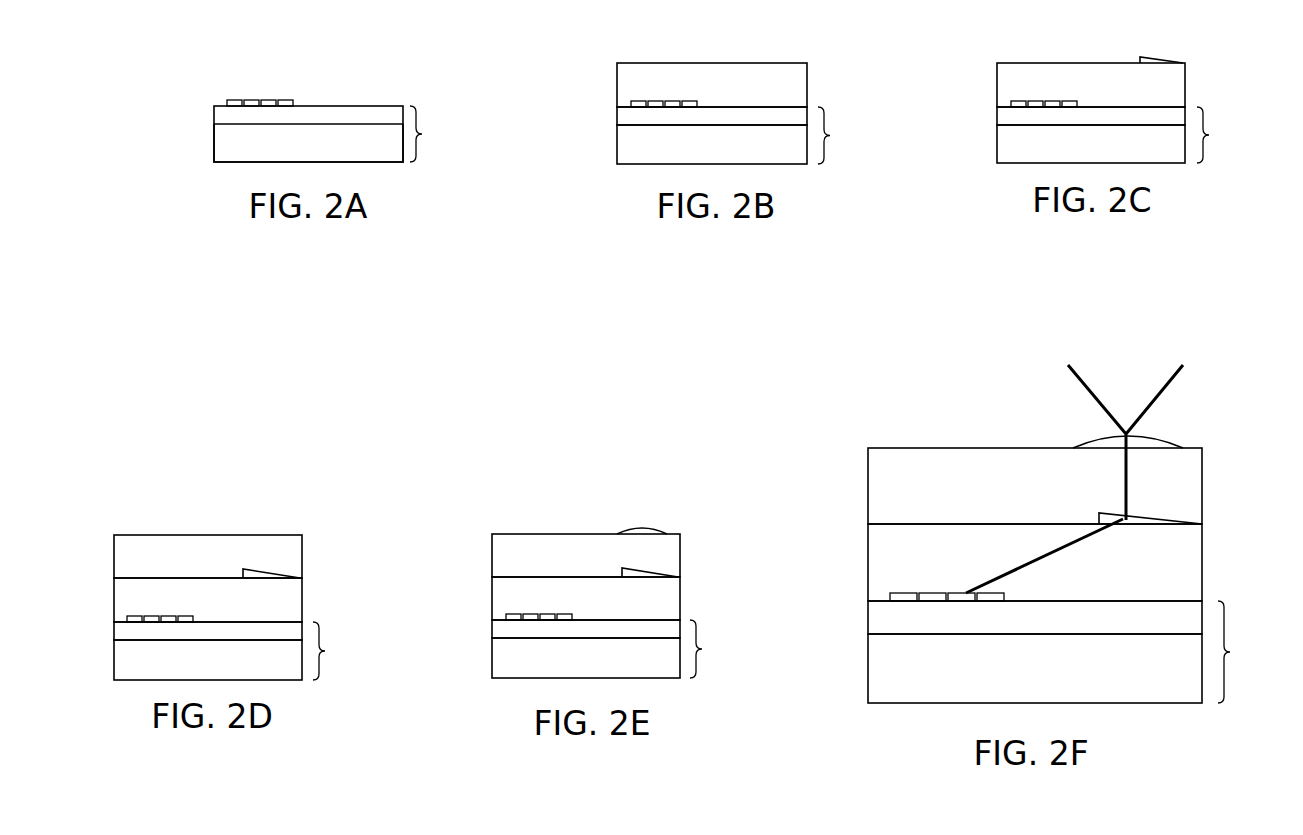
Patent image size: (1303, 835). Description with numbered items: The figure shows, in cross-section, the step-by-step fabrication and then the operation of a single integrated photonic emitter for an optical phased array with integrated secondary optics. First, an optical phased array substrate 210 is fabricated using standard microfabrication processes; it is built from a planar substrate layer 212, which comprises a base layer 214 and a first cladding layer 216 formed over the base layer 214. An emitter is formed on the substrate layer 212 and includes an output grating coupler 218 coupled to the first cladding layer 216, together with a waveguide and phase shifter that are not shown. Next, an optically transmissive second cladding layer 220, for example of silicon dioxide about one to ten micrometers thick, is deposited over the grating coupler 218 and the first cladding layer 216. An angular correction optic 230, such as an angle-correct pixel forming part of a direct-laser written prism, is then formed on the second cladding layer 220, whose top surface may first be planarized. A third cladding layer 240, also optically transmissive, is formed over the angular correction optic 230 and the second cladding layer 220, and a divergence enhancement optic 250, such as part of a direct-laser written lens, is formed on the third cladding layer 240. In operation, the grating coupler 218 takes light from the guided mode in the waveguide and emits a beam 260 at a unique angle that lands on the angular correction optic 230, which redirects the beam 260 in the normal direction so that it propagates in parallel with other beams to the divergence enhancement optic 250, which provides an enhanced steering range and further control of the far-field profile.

In FIG. 2A, the optical phased array substrate 210 is at (371, 84).
In FIG. 2A, the planar substrate layer 212 is at (440, 134).
In FIG. 2B, the planar substrate layer 212 is at (847, 135).
In FIG. 2C, the planar substrate layer 212 is at (1227, 135).
In FIG. 2D, the planar substrate layer 212 is at (344, 651).
In FIG. 2E, the planar substrate layer 212 is at (720, 649).
In FIG. 2F, the planar substrate layer 212 is at (1248, 652).
In FIG. 2A, the base layer 214 is at (218, 145).
In FIG. 2B, the base layer 214 is at (625, 152).
In FIG. 2C, the base layer 214 is at (1003, 152).
In FIG. 2D, the base layer 214 is at (122, 675).
In FIG. 2E, the base layer 214 is at (498, 663).
In FIG. 2F, the base layer 214 is at (877, 668).
In FIG. 2A, the first cladding layer 216 is at (218, 118).
In FIG. 2B, the first cladding layer 216 is at (625, 117).
In FIG. 2C, the first cladding layer 216 is at (1003, 117).
In FIG. 2D, the first cladding layer 216 is at (122, 637).
In FIG. 2E, the first cladding layer 216 is at (498, 628).
In FIG. 2F, the first cladding layer 216 is at (877, 622).
In FIG. 2A, the output grating coupler 218 is at (268, 99).
In FIG. 2B, the output grating coupler 218 is at (657, 101).
In FIG. 2C, the output grating coupler 218 is at (1035, 101).
In FIG. 2D, the output grating coupler 218 is at (150, 616).
In FIG. 2E, the output grating coupler 218 is at (528, 614).
In FIG. 2F, the output grating coupler 218 is at (935, 593).
In FIG. 2B, the second cladding layer 220 is at (798, 79).
In FIG. 2C, the second cladding layer 220 is at (1175, 86).
In FIG. 2D, the second cladding layer 220 is at (295, 597).
In FIG. 2E, the second cladding layer 220 is at (675, 601).
In FIG. 2F, the second cladding layer 220 is at (1196, 584).
In FIG. 2C, the angular correction optic 230 is at (1147, 56).
In FIG. 2D, the angular correction optic 230 is at (270, 576).
In FIG. 2E, the angular correction optic 230 is at (650, 573).
In FIG. 2F, the angular correction optic 230 is at (1149, 520).
In FIG. 2D, the third cladding layer 240 is at (203, 545).
In FIG. 2E, the third cladding layer 240 is at (570, 544).
In FIG. 2F, the third cladding layer 240 is at (877, 484).
In FIG. 2E, the divergence enhancement optic 250 is at (667, 528).
In FIG. 2F, the divergence enhancement optic 250 is at (1169, 441).
In FIG. 2F, the beam 260 is at (1097, 544).